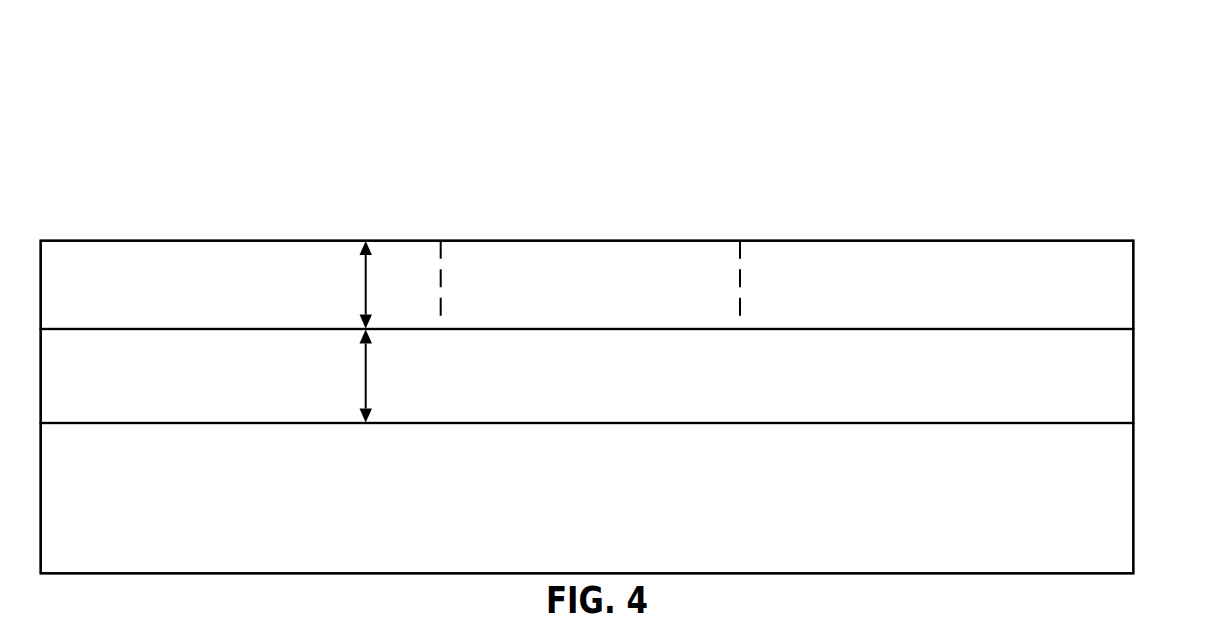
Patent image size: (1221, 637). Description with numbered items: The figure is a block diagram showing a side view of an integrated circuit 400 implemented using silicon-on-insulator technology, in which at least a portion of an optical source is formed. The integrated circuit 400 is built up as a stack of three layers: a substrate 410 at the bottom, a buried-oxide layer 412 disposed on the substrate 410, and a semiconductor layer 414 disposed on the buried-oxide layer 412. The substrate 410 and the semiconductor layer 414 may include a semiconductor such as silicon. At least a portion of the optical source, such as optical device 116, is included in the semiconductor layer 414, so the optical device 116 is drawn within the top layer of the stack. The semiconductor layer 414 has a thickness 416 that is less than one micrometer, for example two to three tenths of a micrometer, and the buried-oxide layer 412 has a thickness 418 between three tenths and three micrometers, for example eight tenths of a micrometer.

The integrated circuit 400 is at (988, 95).
The semiconductor layer 414 is at (1125, 306).
The buried-oxide layer 412 is at (1125, 398).
The substrate 410 is at (570, 520).
The optical device 116 is at (574, 306).
The thickness 416 is at (364, 299).
The thickness 418 is at (364, 390).